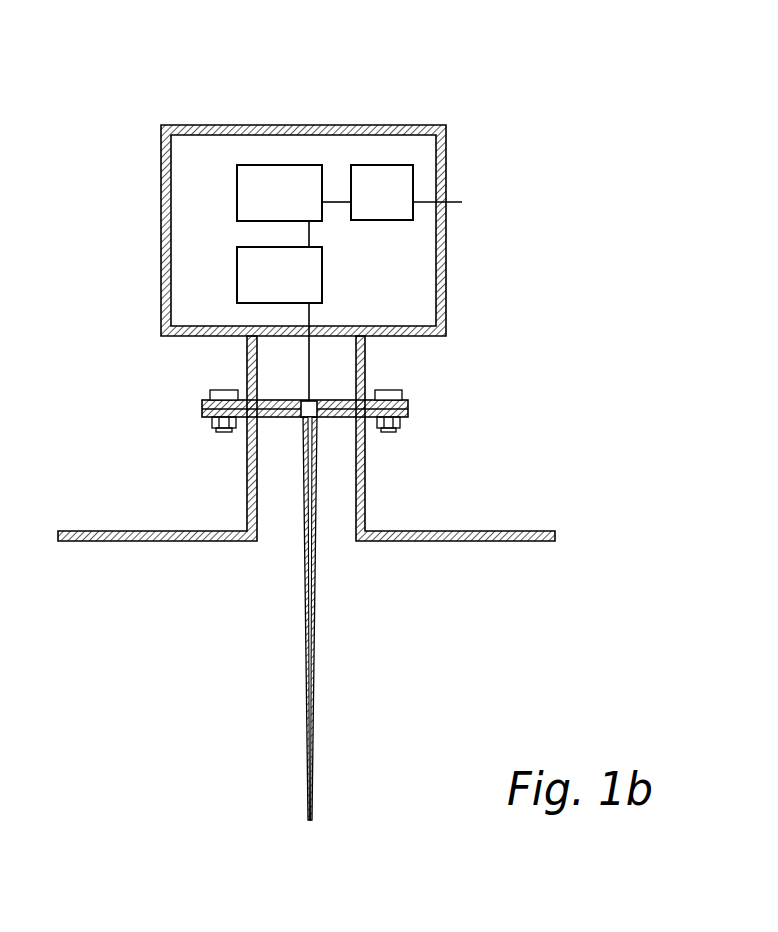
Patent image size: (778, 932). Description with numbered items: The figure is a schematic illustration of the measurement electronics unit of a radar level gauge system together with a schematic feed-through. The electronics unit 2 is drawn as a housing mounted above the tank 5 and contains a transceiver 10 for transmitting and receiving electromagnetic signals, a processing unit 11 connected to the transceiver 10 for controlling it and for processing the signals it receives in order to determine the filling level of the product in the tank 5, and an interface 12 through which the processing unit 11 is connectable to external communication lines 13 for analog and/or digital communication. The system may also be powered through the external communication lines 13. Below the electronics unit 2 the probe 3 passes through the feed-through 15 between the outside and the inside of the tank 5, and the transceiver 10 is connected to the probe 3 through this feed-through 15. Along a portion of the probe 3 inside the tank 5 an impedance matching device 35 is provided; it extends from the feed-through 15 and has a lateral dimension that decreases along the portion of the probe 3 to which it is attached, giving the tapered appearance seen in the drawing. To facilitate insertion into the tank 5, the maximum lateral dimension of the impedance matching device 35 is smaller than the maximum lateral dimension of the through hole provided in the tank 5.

The electronics unit 2 is at (222, 125).
The probe 3 is at (351, 618).
The tank 5 is at (482, 530).
The transceiver 10 is at (322, 275).
The processing unit 11 is at (237, 195).
The interface 12 is at (384, 165).
The external communication lines 13 is at (455, 203).
The feed-through 15 is at (312, 400).
The impedance matching device 35 is at (317, 550).